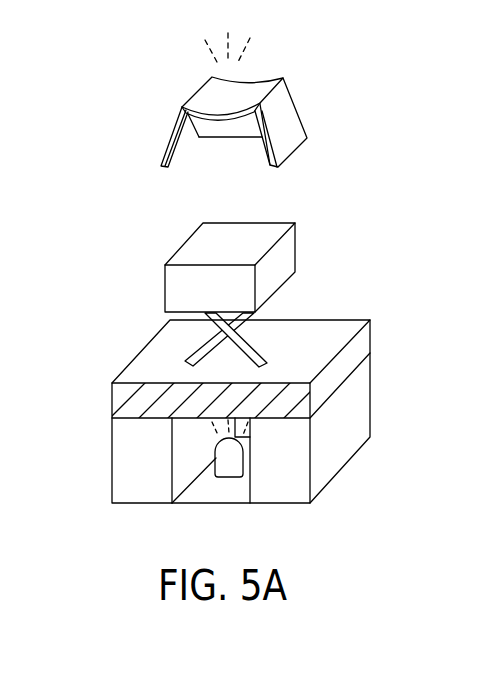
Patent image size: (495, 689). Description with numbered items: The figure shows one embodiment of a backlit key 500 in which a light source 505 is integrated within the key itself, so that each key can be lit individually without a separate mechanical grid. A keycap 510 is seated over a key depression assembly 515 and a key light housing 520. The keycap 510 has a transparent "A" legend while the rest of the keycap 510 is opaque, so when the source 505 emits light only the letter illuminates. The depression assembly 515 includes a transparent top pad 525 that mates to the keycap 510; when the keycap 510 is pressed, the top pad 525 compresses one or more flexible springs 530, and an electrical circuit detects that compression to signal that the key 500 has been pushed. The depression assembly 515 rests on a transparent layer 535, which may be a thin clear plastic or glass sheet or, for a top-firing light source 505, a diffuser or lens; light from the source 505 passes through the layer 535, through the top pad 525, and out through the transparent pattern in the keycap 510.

The key 500 is at (102, 129).
The light source 505 is at (228, 478).
The keycap 510 is at (297, 108).
The key depression assembly 515 is at (395, 223).
The key light housing 520 is at (372, 408).
The transparent top pad 525 is at (297, 242).
The flexible springs 530 is at (197, 355).
The transparent layer 535 is at (112, 403).